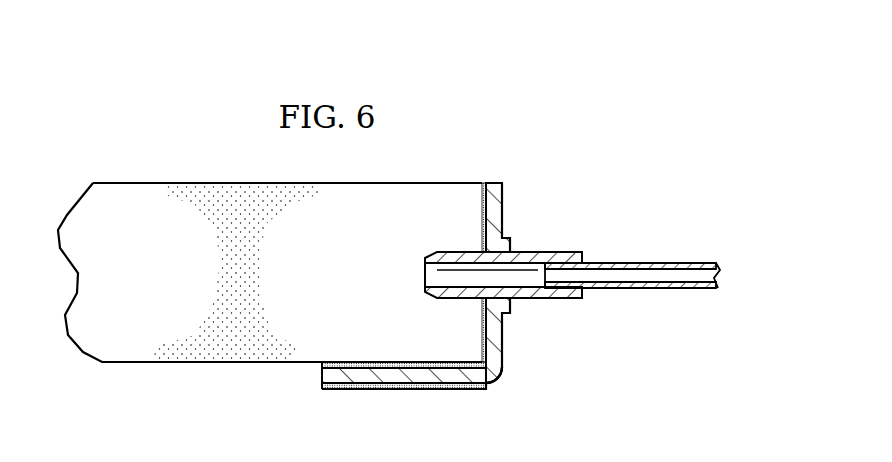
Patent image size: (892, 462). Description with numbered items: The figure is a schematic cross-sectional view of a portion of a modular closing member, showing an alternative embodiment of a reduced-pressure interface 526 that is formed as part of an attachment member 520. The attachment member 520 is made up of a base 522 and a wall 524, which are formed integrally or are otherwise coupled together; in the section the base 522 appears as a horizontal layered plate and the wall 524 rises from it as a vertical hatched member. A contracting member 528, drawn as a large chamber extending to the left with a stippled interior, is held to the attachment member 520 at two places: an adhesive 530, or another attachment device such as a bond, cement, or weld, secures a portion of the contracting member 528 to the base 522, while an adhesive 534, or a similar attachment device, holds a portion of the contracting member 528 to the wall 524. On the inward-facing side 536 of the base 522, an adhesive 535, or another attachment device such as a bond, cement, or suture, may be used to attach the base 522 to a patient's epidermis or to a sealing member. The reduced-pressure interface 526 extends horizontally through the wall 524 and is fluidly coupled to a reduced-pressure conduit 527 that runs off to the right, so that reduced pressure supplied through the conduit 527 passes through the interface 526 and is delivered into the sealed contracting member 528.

The attachment member 520 is at (503, 333).
The base 522 is at (438, 378).
The wall 524 is at (502, 196).
The reduced-pressure interface 526 is at (556, 252).
The reduced-pressure conduit 527 is at (672, 263).
The contracting member 528 is at (128, 183).
The adhesive 530 is at (374, 364).
The adhesive 534 is at (484, 194).
The adhesive 535 is at (496, 381).
The inward-facing side 536 is at (328, 389).